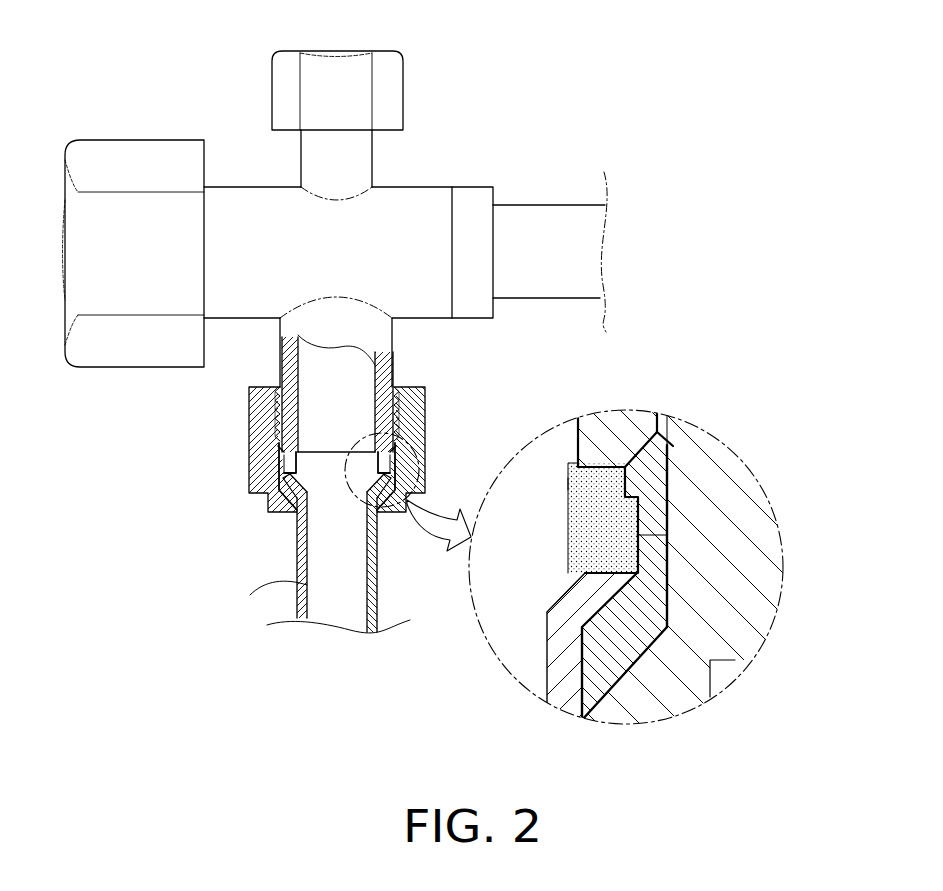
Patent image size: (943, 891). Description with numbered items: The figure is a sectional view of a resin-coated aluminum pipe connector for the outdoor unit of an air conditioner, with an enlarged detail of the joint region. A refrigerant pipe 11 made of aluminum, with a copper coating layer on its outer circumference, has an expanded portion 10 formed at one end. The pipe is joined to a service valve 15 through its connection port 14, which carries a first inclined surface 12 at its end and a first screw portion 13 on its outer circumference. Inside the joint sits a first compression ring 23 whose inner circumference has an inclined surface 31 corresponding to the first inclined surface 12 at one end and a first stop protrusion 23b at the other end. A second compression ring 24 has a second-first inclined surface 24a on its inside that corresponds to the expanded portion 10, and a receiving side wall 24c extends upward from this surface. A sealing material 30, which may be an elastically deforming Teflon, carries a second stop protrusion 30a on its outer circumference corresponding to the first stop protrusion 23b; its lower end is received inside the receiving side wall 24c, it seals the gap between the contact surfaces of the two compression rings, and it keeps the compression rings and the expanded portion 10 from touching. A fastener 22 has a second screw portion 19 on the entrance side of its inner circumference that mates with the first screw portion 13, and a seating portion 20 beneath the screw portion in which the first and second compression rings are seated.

The expanded portion 10 is at (578, 598).
The refrigerant pipe 11 is at (299, 583).
The first inclined surface 12 is at (673, 447).
The first screw portion 13 is at (278, 396).
The connection port 14 is at (373, 338).
The service valve 15 is at (452, 156).
The second screw portion 19 is at (283, 430).
The seating portion 20 is at (665, 525).
The fastener 22 is at (250, 482).
The first compression ring 23 is at (803, 420).
The first stop protrusion 23b is at (665, 515).
The second compression ring 24 is at (840, 605).
The second-first inclined surface 24a is at (667, 628).
The receiving side wall 24c is at (667, 590).
The sealing material 30 is at (608, 515).
The second stop protrusion 30a is at (568, 483).
The inclined surface 31 is at (660, 485).